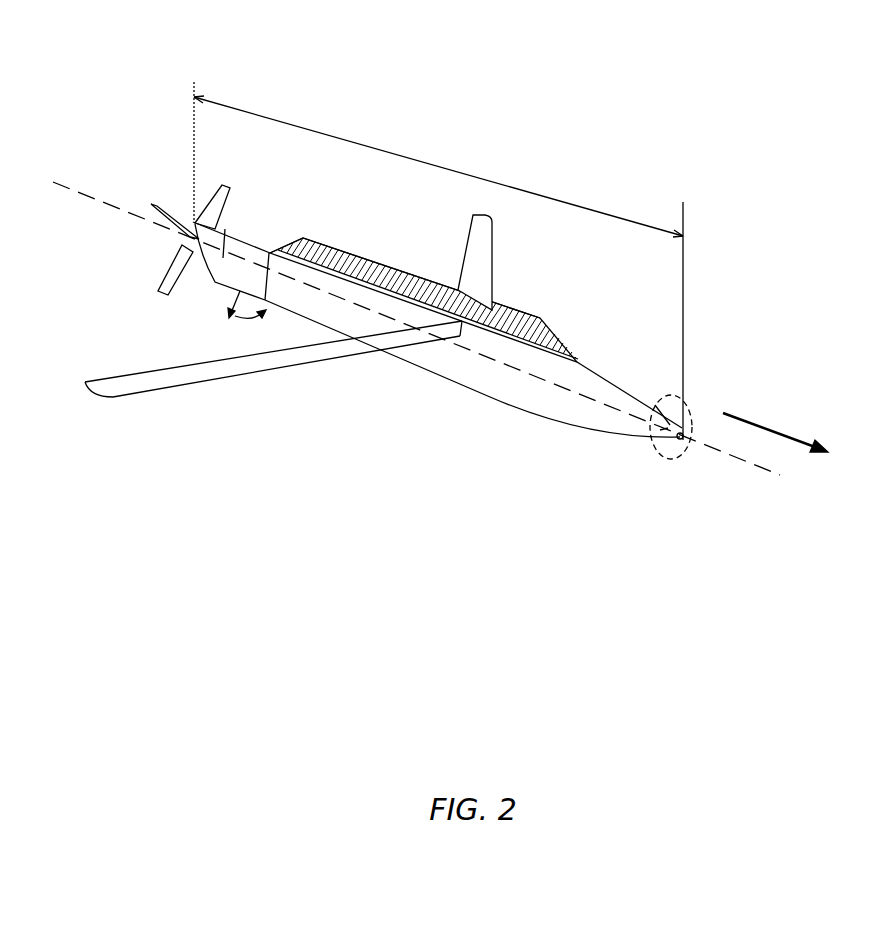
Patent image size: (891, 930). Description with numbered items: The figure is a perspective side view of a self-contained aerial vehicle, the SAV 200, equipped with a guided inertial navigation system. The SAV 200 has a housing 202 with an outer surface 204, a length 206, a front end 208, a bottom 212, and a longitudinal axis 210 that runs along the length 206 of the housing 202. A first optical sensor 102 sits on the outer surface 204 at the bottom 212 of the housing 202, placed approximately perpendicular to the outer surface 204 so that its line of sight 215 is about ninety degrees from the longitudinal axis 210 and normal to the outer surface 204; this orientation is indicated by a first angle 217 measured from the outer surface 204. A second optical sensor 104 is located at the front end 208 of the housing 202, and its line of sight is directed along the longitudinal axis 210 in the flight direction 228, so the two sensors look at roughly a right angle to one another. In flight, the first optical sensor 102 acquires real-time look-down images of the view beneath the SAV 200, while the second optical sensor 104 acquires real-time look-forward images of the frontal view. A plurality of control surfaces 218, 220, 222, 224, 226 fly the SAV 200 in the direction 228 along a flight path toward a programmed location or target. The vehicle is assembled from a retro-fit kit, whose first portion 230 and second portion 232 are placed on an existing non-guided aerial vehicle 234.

The SAV 200 is at (797, 138).
The first optical sensor 102 is at (227, 290).
The second optical sensor 104 is at (687, 450).
The housing 202 is at (592, 373).
The outer surface 204 is at (222, 281).
The length 206 is at (563, 202).
The front end 208 is at (662, 457).
The longitudinal axis 210 is at (91, 197).
The bottom 212 is at (418, 365).
The line of sight 215 is at (230, 321).
The first angle 217 is at (265, 316).
The control surface 218 is at (488, 287).
The control surface 220 is at (112, 388).
The control surface 222 is at (225, 198).
The control surface 224 is at (160, 225).
The control surface 226 is at (162, 290).
The direction 228 is at (760, 420).
The first portion of the retro-fit kit 230 is at (335, 260).
The second portion of the retro-fit kit 232 is at (257, 250).
The non-guided aerial vehicle 234 is at (362, 320).